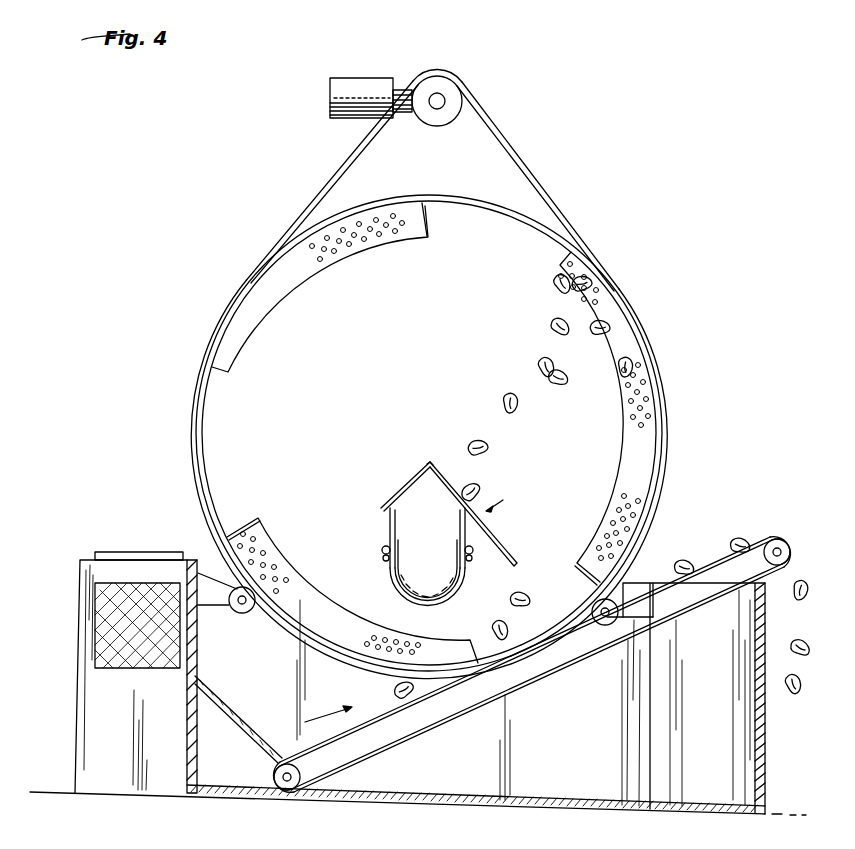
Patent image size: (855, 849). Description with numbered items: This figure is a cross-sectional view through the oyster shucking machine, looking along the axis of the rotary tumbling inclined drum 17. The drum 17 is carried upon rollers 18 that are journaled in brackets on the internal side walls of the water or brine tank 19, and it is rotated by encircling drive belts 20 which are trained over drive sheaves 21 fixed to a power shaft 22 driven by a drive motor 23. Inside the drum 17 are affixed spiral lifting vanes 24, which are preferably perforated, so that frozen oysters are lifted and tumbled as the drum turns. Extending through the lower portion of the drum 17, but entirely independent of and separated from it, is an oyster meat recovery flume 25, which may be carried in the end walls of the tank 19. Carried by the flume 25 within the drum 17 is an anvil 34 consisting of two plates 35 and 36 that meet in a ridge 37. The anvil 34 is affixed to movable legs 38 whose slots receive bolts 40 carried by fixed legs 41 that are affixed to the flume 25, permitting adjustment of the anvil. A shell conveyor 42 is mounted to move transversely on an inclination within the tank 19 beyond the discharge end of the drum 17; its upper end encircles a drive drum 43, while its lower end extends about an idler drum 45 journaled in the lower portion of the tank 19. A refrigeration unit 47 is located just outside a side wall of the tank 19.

The rotary tumbling inclined drum 17 is at (484, 202).
The rollers 18 is at (245, 606).
The water or brine tank 19 is at (481, 802).
The drive belts 20 is at (527, 172).
The drive sheaves 21 is at (456, 103).
The power shaft 22 is at (435, 105).
The drive motor 23 is at (330, 99).
The spiral lifting vanes 24 is at (372, 246).
The oyster meat recovery flume 25 is at (420, 596).
The anvil 34 is at (495, 496).
The plate 35 is at (507, 553).
The plate 36 is at (403, 484).
The ridge 37 is at (432, 458).
The movable legs 38 is at (459, 519).
The bolts 40 is at (386, 555).
The fixed legs 41 is at (392, 573).
The shell conveyor 42 is at (707, 568).
The drive drum 43 is at (777, 546).
The idler drum 45 is at (286, 792).
The refrigeration unit 47 is at (95, 714).